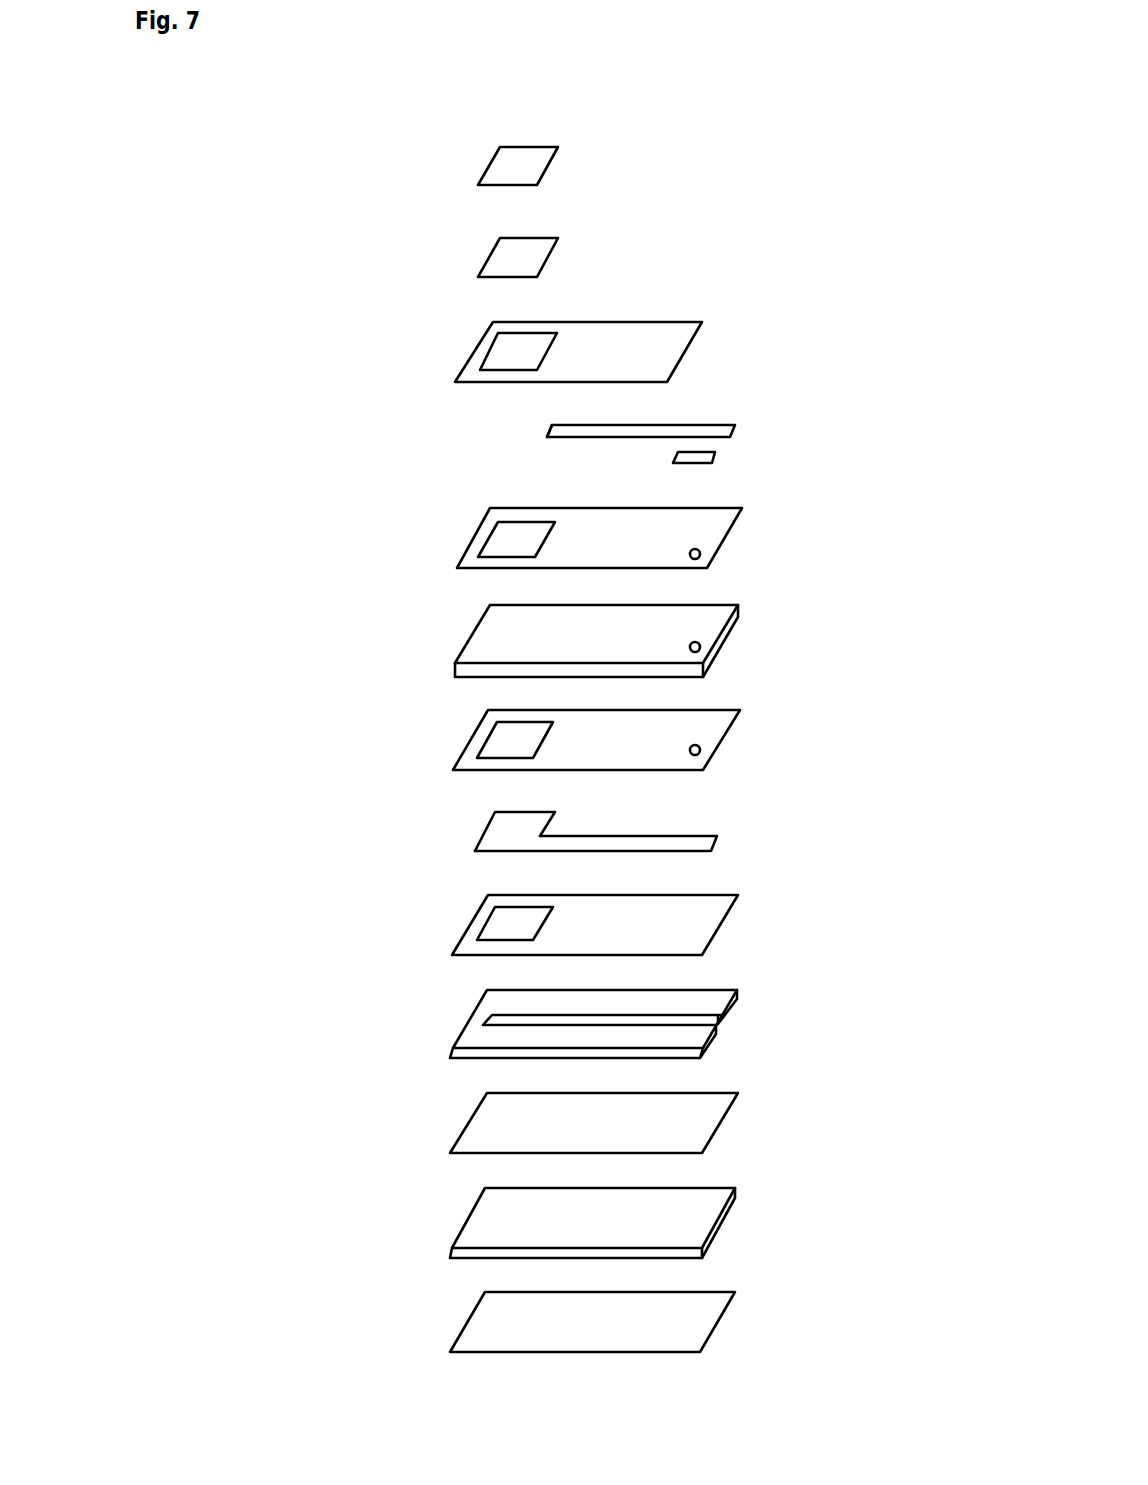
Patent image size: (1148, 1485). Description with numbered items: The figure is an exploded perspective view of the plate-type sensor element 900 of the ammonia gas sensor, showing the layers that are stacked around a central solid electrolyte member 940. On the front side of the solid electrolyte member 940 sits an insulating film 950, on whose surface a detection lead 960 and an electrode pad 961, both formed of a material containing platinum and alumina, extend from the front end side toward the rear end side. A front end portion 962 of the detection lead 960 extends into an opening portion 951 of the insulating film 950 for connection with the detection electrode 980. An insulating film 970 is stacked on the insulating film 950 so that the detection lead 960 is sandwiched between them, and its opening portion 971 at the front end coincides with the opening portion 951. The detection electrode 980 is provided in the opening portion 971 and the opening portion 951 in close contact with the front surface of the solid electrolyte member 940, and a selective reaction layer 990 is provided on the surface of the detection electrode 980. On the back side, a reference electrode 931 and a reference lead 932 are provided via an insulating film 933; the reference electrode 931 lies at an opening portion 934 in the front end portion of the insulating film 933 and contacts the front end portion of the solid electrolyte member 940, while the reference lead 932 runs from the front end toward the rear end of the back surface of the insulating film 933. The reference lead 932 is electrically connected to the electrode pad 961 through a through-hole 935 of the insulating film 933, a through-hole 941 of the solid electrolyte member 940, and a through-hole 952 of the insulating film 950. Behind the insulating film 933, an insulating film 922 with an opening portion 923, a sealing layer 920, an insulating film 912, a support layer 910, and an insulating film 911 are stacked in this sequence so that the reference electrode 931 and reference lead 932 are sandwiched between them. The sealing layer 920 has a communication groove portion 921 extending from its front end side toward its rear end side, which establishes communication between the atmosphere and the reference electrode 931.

The sensor element 900 is at (752, 152).
The selective reaction layer 990 is at (550, 167).
The detection electrode 980 is at (555, 253).
The insulating film 970 is at (590, 352).
The opening portion 971 is at (496, 358).
The detection lead 960 is at (649, 428).
The electrode pad 961 is at (720, 455).
The front end portion 962 is at (548, 433).
The insulating film 950 is at (612, 551).
The opening portion 951 is at (498, 544).
The through-hole 952 is at (701, 558).
The solid electrolyte member 940 is at (641, 647).
The through-hole 941 is at (701, 650).
The insulating film 933 is at (622, 756).
The opening portion 934 is at (496, 730).
The through-hole 935 is at (694, 756).
The reference lead 932 is at (595, 813).
The reference electrode 931 is at (493, 822).
The insulating film 922 is at (614, 925).
The opening portion 923 is at (490, 930).
The sealing layer 920 is at (615, 1021).
The communication groove portion 921 is at (512, 1023).
The insulating film 912 is at (722, 1126).
The support layer 910 is at (728, 1218).
The insulating film 911 is at (722, 1335).